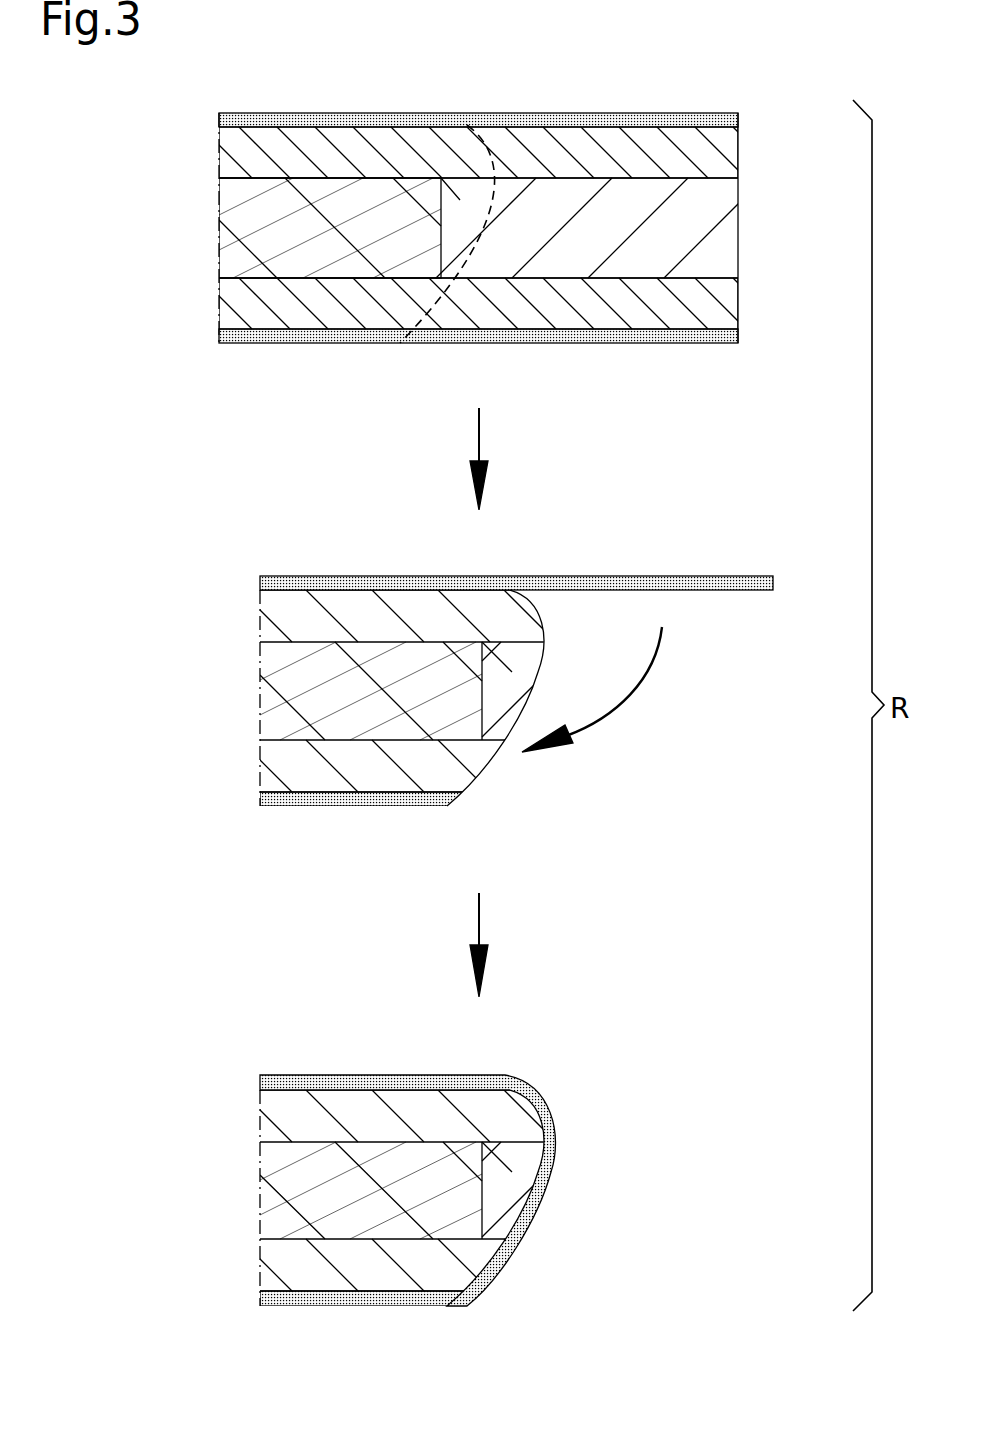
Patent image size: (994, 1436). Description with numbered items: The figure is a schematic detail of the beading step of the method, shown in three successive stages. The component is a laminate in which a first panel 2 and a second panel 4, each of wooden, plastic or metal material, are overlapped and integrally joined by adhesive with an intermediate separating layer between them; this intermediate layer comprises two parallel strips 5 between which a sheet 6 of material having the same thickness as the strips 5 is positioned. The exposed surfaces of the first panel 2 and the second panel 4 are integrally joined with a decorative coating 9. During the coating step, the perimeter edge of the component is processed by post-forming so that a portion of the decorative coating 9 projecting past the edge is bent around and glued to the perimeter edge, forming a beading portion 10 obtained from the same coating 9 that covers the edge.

The first panel 2 is at (193, 315).
The second panel 4 is at (192, 136).
The strip 5 is at (738, 221).
The sheet 6 is at (309, 188).
The decorative coating 9 is at (436, 122).
The beading portion 10 is at (698, 575).